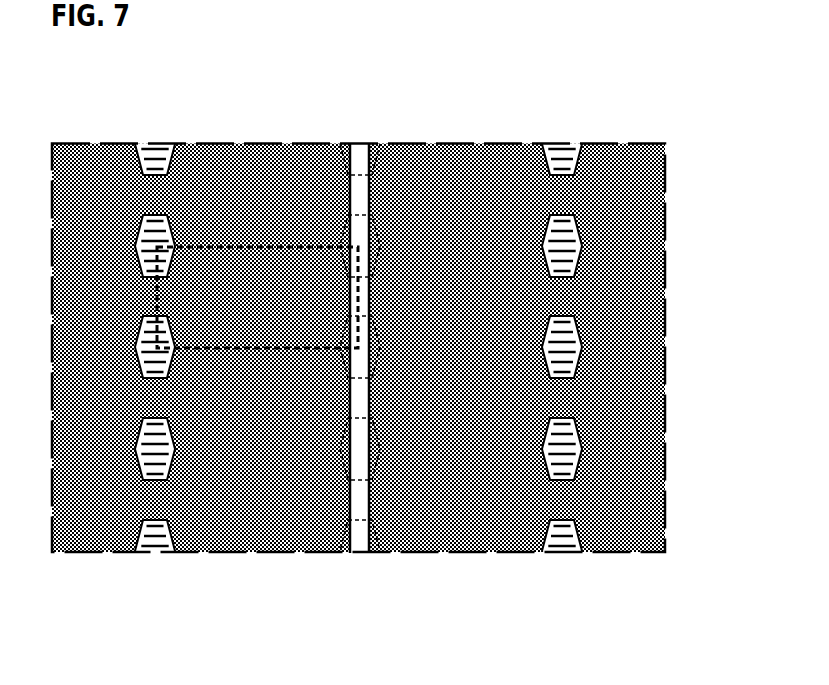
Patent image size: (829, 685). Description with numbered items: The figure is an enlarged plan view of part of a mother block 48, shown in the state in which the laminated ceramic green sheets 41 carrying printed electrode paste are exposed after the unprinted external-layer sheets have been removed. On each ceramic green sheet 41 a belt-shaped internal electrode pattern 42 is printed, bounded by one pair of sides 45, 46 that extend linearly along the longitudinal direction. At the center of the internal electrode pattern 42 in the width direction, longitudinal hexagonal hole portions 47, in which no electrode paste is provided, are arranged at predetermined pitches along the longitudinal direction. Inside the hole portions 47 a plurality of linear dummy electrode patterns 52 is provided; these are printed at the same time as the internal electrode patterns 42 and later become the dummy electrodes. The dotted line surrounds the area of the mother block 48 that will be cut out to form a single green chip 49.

The ceramic green sheet 41 is at (355, 195).
The internal electrode pattern 42 is at (77, 141).
The side of internal electrode pattern 45 is at (358, 490).
The side of internal electrode pattern 46 is at (352, 508).
The hexagonal hole portion 47 is at (136, 143).
The mother block 48 is at (45, 141).
The green chip 49 is at (284, 245).
The dummy electrode pattern 52 is at (572, 240).